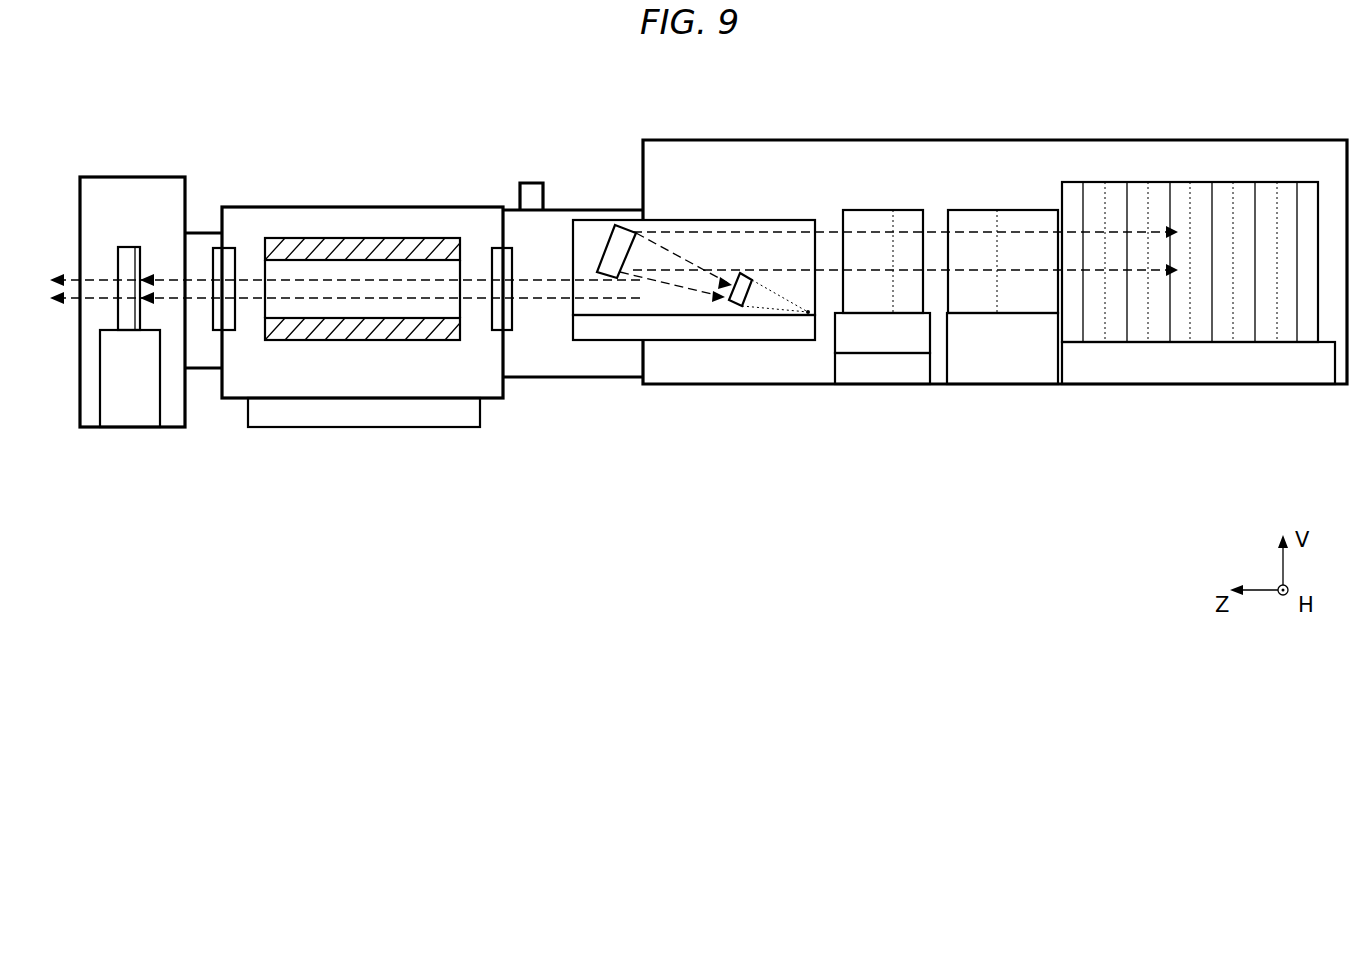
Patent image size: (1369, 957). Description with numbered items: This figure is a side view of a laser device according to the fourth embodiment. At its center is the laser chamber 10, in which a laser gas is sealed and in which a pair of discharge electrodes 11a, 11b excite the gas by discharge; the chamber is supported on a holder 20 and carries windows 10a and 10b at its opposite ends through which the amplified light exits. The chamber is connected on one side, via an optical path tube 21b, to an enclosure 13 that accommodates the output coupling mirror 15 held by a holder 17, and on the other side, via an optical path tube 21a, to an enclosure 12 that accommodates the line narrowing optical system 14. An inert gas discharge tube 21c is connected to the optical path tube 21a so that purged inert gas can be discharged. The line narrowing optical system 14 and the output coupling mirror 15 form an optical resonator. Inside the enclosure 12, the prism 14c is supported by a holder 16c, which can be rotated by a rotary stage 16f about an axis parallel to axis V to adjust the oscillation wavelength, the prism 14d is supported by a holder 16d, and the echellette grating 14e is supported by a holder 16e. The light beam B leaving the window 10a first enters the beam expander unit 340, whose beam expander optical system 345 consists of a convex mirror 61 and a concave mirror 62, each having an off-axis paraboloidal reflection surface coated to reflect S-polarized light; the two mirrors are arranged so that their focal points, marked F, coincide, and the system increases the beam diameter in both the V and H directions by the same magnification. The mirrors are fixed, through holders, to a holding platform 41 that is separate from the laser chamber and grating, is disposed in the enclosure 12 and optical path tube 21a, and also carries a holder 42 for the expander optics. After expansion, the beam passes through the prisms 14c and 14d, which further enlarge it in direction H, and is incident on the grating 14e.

The laser chamber 10 is at (372, 207).
The window 10a is at (492, 255).
The window 10b is at (228, 262).
The discharge electrode 11a is at (278, 245).
The discharge electrode 11b is at (295, 340).
The enclosure 12 is at (657, 140).
The enclosure 13 is at (128, 177).
The line narrowing optical system 14 is at (1016, 263).
The prism 14c is at (870, 210).
The prism 14d is at (992, 210).
The grating 14e is at (1175, 182).
The output coupling mirror 15 is at (128, 330).
The holder 16c is at (863, 345).
The holder 16d is at (995, 380).
The holder 16e is at (1150, 388).
The rotary stage 16f is at (912, 380).
The holder 17 is at (120, 420).
The holder 20 is at (328, 420).
The optical path tube 21a is at (575, 380).
The optical path tube 21b is at (210, 372).
The inert gas discharge tube 21c is at (524, 186).
The holding platform 41 is at (712, 342).
The holder 42 is at (740, 228).
The convex mirror 61 is at (748, 280).
The concave mirror 62 is at (622, 226).
The beam expander unit 340 is at (720, 520).
The beam expander optical system 345 is at (701, 326).
The light beam B is at (530, 300).
The focal point F is at (808, 313).